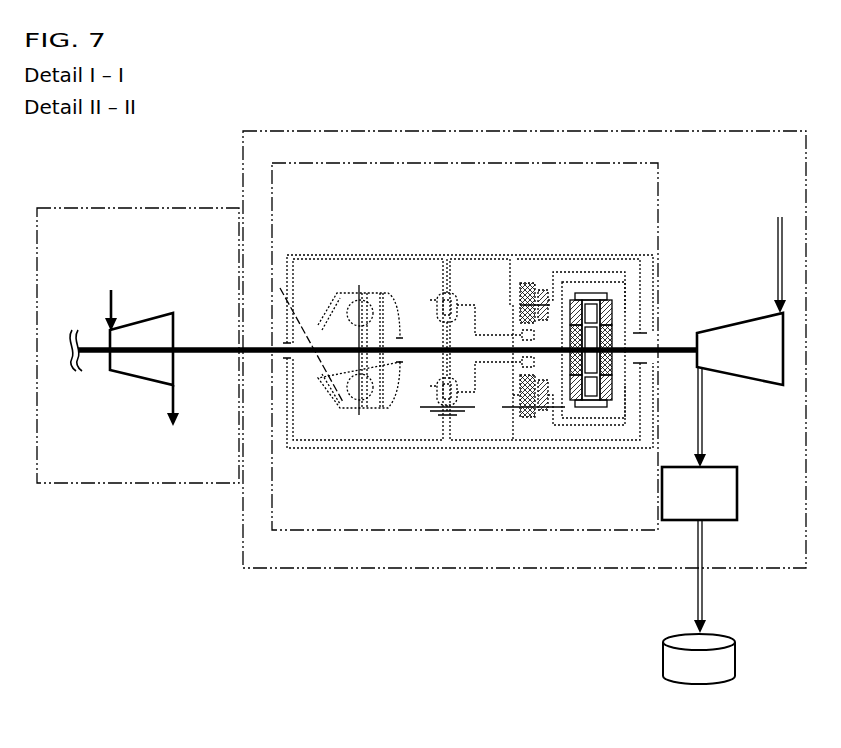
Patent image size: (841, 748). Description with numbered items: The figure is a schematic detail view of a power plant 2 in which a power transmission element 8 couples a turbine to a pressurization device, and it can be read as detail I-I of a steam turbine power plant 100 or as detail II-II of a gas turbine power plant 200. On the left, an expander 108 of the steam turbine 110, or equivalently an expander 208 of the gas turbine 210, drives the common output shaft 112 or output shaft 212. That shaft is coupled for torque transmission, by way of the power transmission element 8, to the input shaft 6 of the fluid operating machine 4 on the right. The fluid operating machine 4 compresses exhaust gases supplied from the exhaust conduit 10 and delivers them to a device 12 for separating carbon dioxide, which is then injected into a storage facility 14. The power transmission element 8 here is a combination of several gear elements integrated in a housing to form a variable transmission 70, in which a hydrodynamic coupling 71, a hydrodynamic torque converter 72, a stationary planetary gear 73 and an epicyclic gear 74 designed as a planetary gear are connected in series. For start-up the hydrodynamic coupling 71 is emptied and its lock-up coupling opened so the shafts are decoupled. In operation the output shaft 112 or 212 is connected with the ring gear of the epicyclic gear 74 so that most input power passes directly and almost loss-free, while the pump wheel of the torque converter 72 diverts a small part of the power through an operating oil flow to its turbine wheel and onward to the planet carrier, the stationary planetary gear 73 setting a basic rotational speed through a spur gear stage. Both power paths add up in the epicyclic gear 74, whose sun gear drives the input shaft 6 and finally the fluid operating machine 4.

The aircraft engine system 2 is at (757, 130).
The fluid operating machine 4 is at (740, 349).
The input shaft 6 is at (676, 345).
The power transmission element 8 is at (371, 163).
The exhaust conduit 10 is at (777, 270).
The device for separating carbon dioxide 12 is at (699, 443).
The storage facility 14 is at (699, 602).
The variable transmission 70 is at (473, 182).
The hydrodynamic coupling 71 is at (359, 432).
The hydrodynamic torque converter 72 is at (440, 278).
The stationary planetary gear 73 is at (528, 435).
The epicyclic gear 74 is at (598, 283).
The steam turbine power plant 100 is at (148, 430).
The gas turbine power plant 200 is at (148, 430).
The expander 108 is at (129, 415).
The expander 208 is at (141, 391).
The steam turbine 110 is at (153, 430).
The gas turbine 210 is at (165, 485).
The output shaft 112 is at (156, 294).
The output shaft 212 is at (220, 337).